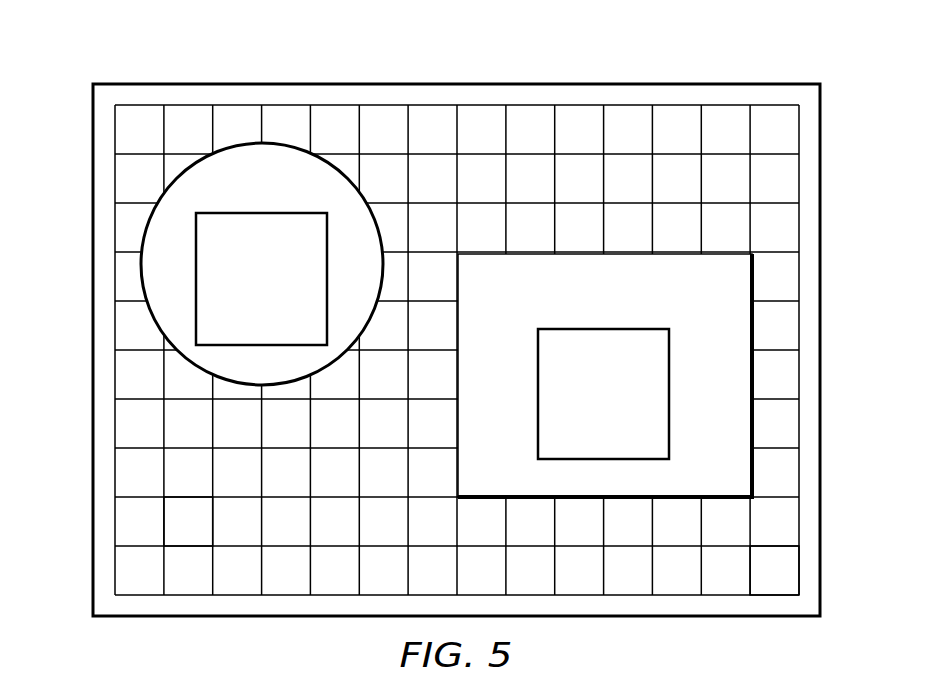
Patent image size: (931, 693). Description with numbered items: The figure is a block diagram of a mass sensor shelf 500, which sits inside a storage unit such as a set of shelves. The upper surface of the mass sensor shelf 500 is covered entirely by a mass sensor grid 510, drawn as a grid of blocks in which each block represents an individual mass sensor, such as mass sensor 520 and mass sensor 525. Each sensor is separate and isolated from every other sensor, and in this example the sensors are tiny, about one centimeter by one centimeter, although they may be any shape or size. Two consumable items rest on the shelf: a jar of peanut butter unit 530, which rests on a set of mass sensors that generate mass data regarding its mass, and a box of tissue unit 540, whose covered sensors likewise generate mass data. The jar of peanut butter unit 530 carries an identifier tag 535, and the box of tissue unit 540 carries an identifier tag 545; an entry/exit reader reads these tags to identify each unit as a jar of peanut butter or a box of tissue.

The mass sensor shelf 500 is at (581, 78).
The mass sensor grid 510 is at (79, 103).
The mass sensor 520 is at (187, 522).
The mass sensor 525 is at (776, 570).
The jar of peanut butter unit 530 is at (243, 143).
The identifier tag 535 is at (242, 322).
The box of tissue unit 540 is at (752, 419).
The identifier tag 545 is at (583, 437).